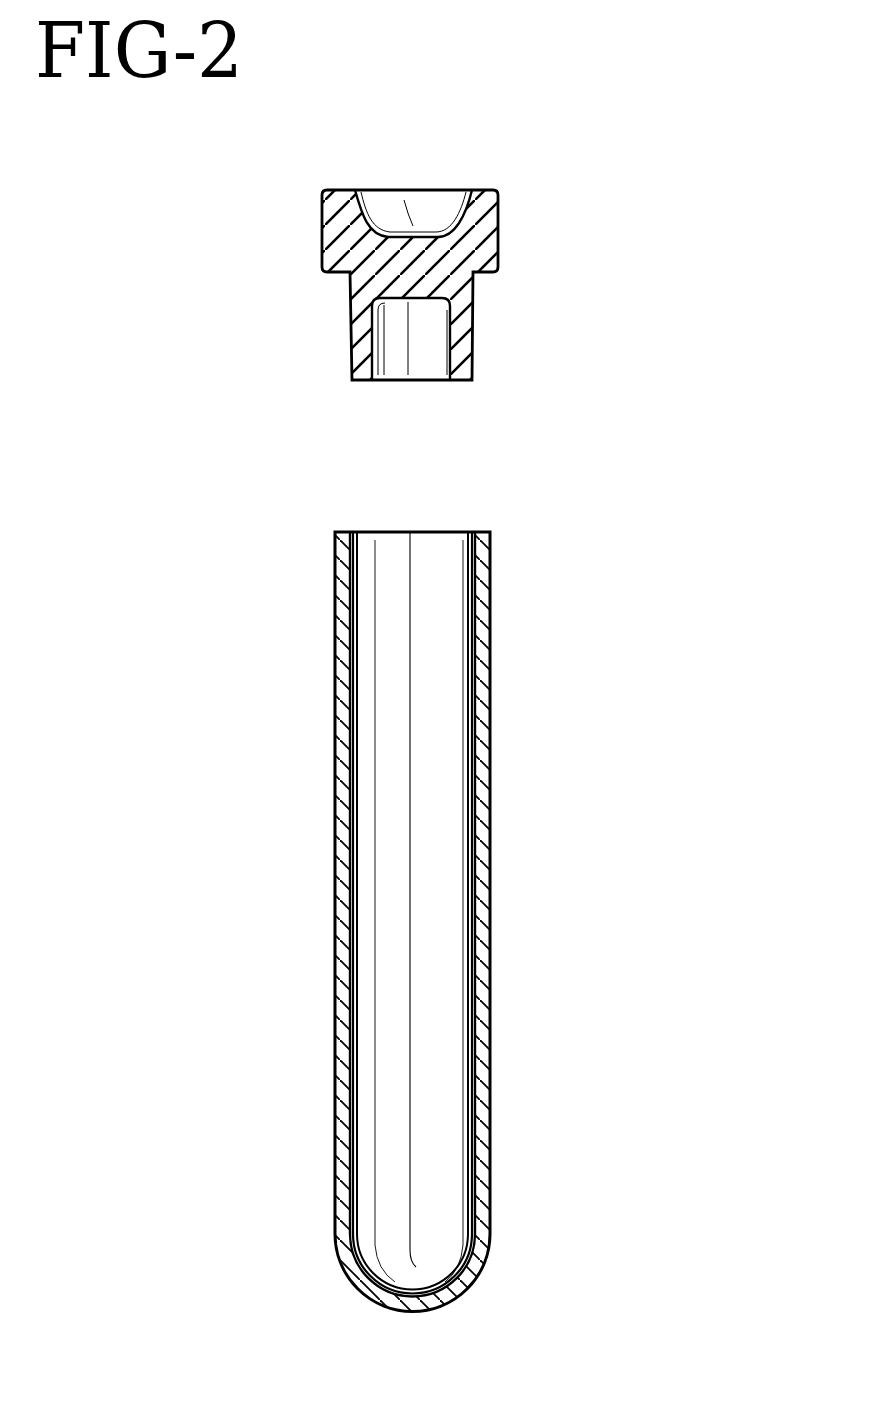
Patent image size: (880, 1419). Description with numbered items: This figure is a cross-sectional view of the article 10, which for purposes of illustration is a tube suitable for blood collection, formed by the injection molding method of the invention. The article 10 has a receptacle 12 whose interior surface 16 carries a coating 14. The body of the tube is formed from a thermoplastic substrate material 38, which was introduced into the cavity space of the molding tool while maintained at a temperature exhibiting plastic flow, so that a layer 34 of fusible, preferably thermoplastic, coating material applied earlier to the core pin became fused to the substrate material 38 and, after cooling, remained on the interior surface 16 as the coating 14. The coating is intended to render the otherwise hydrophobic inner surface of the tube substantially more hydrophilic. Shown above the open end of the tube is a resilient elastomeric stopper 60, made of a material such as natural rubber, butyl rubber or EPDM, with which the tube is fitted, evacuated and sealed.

The article 10 is at (456, 858).
The receptacle 12 is at (388, 845).
The coating 14 is at (472, 567).
The interior surface 16 is at (357, 567).
The layer of coating material 34 is at (485, 645).
The thermoplastic substrate material 38 is at (490, 744).
The resilient elastomeric stopper 60 is at (503, 228).